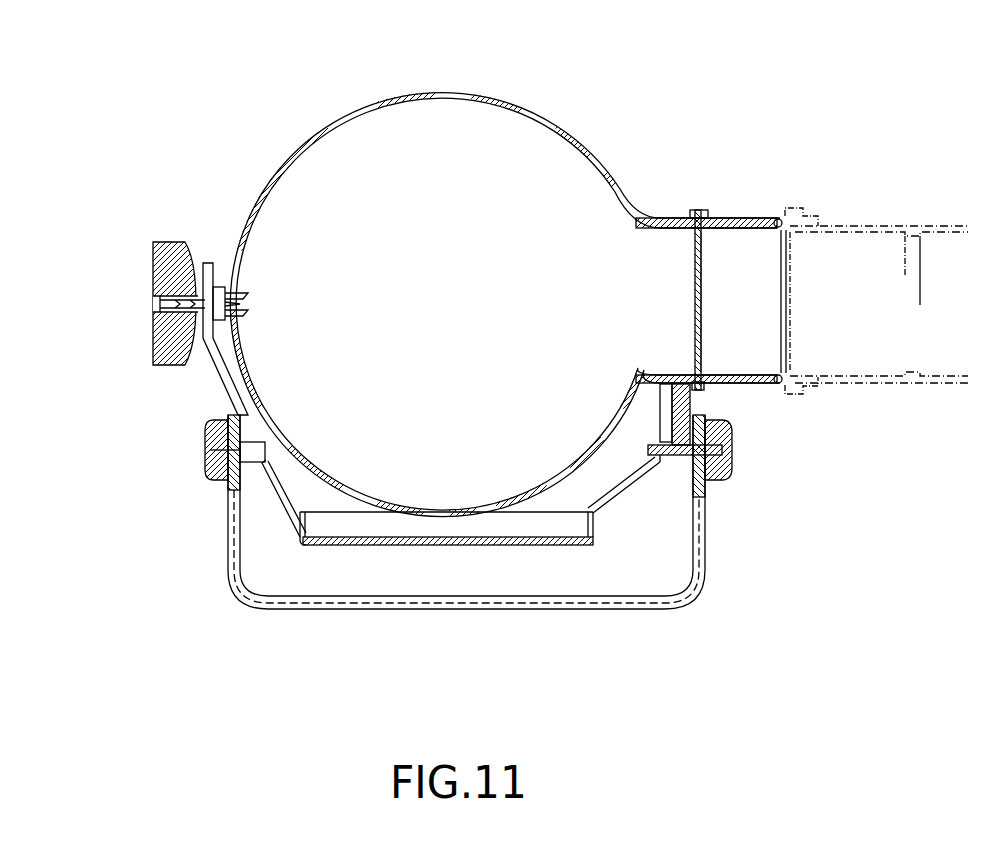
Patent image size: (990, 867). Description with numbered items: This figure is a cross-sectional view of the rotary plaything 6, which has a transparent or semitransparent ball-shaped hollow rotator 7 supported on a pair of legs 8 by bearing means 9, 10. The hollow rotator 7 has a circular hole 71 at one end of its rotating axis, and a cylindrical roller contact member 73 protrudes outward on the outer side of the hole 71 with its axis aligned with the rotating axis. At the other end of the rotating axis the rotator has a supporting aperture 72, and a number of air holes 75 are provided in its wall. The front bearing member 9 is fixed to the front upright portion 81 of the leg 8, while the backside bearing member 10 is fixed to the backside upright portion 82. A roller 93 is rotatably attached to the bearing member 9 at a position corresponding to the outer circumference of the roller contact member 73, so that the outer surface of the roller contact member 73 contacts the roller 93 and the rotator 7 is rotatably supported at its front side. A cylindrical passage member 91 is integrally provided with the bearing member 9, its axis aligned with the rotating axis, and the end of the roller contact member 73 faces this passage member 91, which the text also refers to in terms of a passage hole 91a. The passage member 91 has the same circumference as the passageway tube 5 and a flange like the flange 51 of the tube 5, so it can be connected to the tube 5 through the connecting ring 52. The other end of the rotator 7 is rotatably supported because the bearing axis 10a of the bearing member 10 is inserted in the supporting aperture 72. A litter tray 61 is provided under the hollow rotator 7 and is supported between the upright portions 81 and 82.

The passageway tube 5 is at (893, 222).
The rotary plaything 6 is at (714, 108).
The hollow rotator 7 is at (498, 99).
The leg 8 is at (496, 605).
The front bearing member 9 is at (680, 458).
The backside bearing member 10 is at (215, 368).
The bearing axis 10a is at (245, 308).
The flange 51 is at (795, 236).
The connecting ring 52 is at (800, 214).
The litter tray 61 is at (372, 530).
The circular hole 71 is at (658, 318).
The supporting aperture 72 is at (237, 294).
The roller contact member 73 is at (672, 215).
The air hole 75 is at (437, 92).
The front upright portion 81 is at (706, 535).
The backside upright portion 82 is at (232, 518).
The cylindrical passage member 91 is at (737, 215).
The opening 91a is at (770, 373).
The roller 93 is at (690, 400).